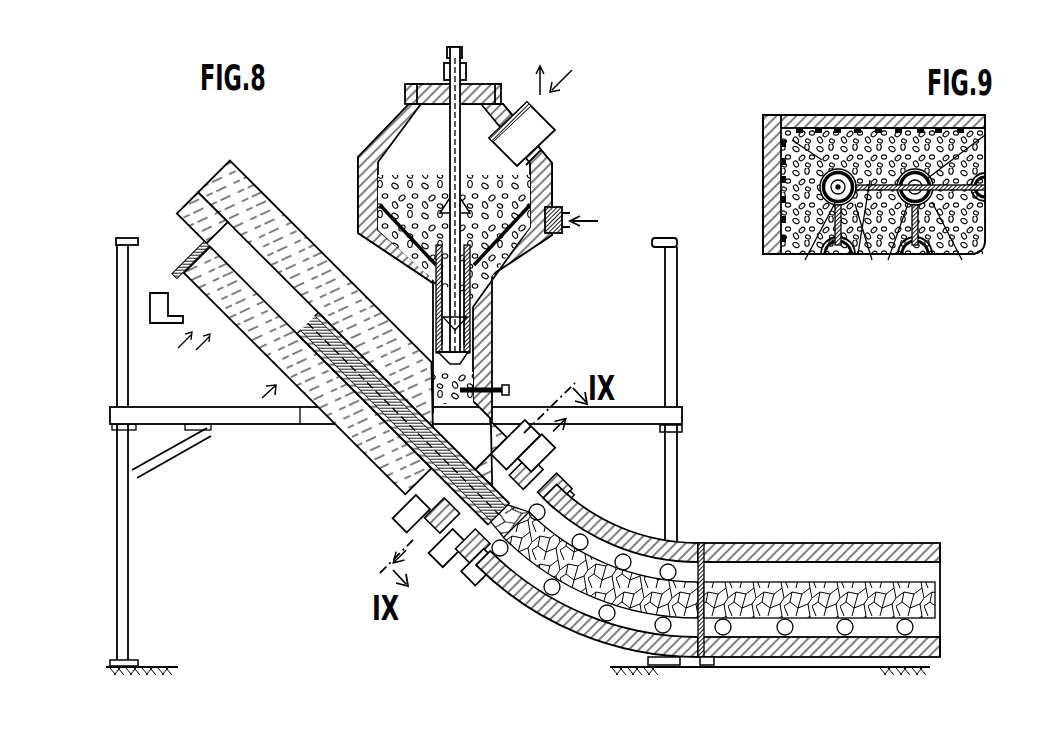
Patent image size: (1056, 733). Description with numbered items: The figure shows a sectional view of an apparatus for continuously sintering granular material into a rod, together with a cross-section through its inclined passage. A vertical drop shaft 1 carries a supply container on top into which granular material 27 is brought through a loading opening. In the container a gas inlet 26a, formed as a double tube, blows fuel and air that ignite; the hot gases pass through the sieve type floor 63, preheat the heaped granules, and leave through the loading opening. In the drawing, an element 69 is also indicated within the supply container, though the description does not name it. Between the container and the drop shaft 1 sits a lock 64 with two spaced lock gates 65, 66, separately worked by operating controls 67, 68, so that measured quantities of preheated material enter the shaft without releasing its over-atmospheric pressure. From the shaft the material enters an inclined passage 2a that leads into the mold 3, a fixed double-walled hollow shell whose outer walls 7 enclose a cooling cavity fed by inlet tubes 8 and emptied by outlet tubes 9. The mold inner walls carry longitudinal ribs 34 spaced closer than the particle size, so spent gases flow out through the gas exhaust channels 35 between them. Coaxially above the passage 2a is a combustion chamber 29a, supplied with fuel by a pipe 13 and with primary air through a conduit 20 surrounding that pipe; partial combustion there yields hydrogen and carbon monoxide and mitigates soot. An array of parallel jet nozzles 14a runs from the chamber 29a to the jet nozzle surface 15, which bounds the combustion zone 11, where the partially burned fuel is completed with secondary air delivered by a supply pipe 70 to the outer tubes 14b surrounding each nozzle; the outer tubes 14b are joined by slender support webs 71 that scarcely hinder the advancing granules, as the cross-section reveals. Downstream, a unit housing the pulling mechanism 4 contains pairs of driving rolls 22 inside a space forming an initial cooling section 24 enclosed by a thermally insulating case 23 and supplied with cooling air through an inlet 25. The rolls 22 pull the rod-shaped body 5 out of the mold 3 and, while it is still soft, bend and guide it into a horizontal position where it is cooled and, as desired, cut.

In FIG. 8, the drop shaft 1 is at (770, 516).
In FIG. 8, the inclined passage 2a is at (354, 466).
In FIG. 8, the mold 3 is at (620, 505).
In FIG. 9, the mold 3 is at (874, 164).
In FIG. 8, the pulling mechanism unit 4 is at (702, 555).
In FIG. 8, the molded rod 5 is at (601, 585).
In FIG. 9, the molded rod 5 is at (899, 185).
In FIG. 8, the outer wall 7 is at (470, 582).
In FIG. 8, the inlet tube 8 is at (446, 582).
In FIG. 8, the outlet tube 9 is at (615, 449).
In FIG. 8, the combustion zone 11 is at (403, 548).
In FIG. 8, the fuel pipe 13 is at (394, 428).
In FIG. 8, the jet nozzle 14a is at (363, 459).
In FIG. 9, the jet nozzle 14a is at (893, 234).
In FIG. 8, the outer tube 14b is at (361, 461).
In FIG. 9, the outer tube 14b is at (873, 196).
In FIG. 8, the jet nozzle surface 15 is at (370, 535).
In FIG. 8, the primary air conduit 20 is at (175, 260).
In FIG. 8, the driving roll 22 is at (587, 615).
In FIG. 8, the thermally insulating case 23 is at (819, 575).
In FIG. 8, the initial cooling section 24 is at (819, 557).
In FIG. 8, the cooling air inlet 25 is at (488, 603).
In FIG. 8, the gas inlet 26a is at (595, 211).
In FIG. 8, the granular material 27 is at (569, 152).
In FIG. 8, the combustion chamber 29a is at (332, 310).
In FIG. 9, the longitudinal rib 34 is at (894, 105).
In FIG. 9, the gas exhaust channel 35 is at (872, 158).
In FIG. 8, the sieve type floor 63 is at (426, 252).
In FIG. 8, the lock 64 is at (584, 205).
In FIG. 8, the lock gate 65 is at (584, 345).
In FIG. 8, the lock gate 66 is at (602, 301).
In FIG. 8, the operating control 67 is at (476, 57).
In FIG. 8, the operating control 68 is at (410, 67).
In FIG. 8, the distributor cone 69 is at (411, 153).
In FIG. 8, the secondary air supply pipe 70 is at (368, 384).
In FIG. 9, the support web 71 is at (907, 223).